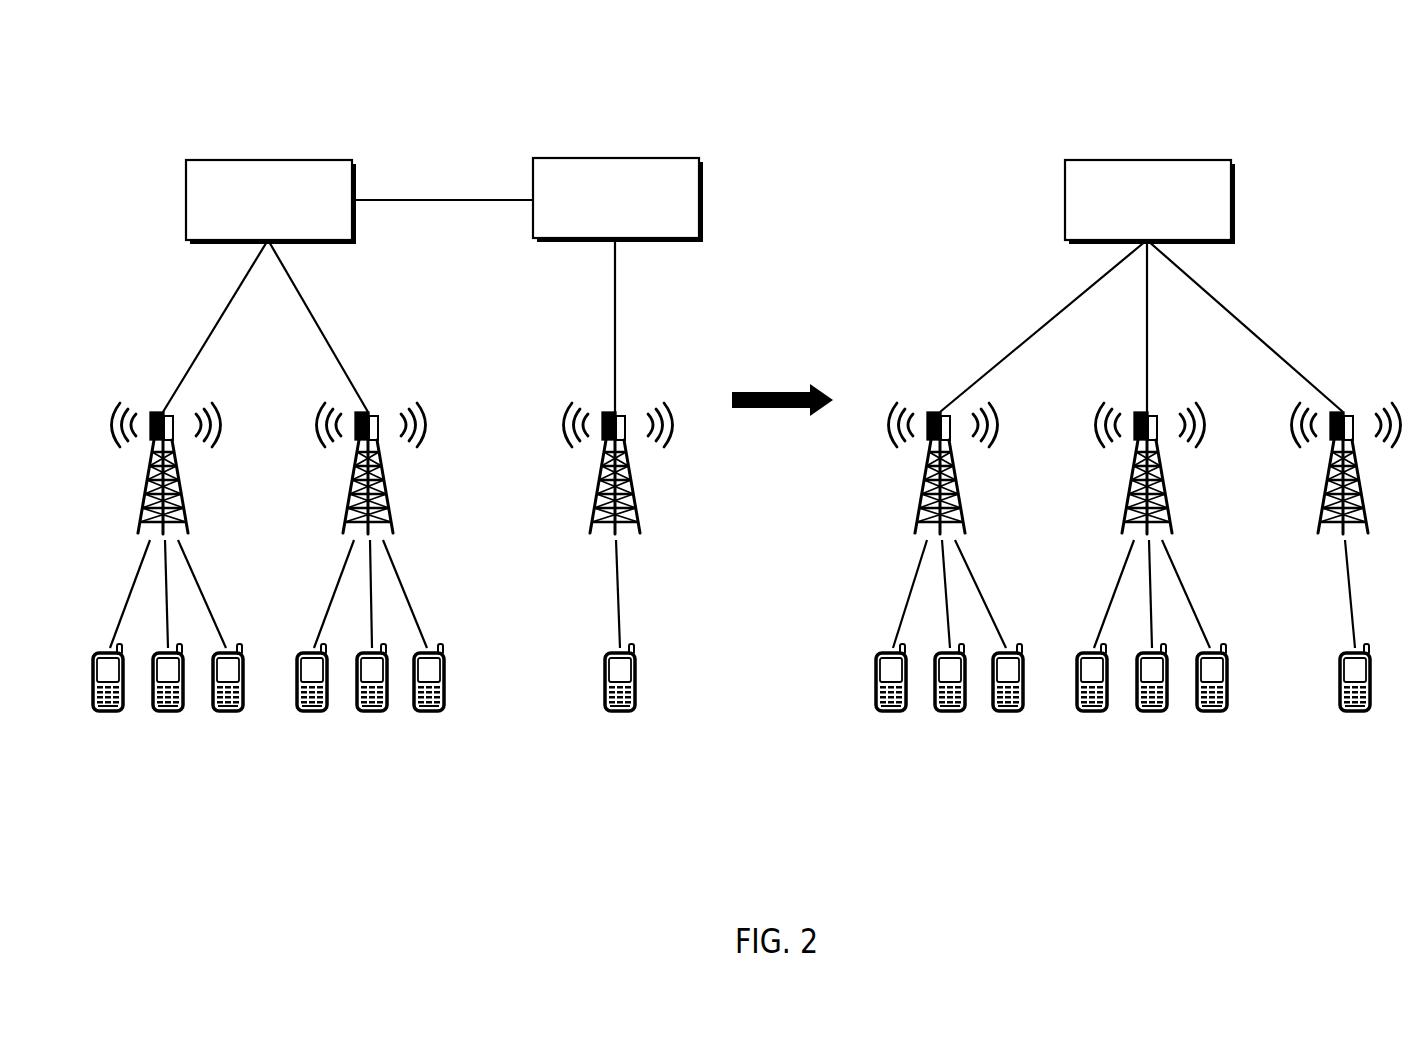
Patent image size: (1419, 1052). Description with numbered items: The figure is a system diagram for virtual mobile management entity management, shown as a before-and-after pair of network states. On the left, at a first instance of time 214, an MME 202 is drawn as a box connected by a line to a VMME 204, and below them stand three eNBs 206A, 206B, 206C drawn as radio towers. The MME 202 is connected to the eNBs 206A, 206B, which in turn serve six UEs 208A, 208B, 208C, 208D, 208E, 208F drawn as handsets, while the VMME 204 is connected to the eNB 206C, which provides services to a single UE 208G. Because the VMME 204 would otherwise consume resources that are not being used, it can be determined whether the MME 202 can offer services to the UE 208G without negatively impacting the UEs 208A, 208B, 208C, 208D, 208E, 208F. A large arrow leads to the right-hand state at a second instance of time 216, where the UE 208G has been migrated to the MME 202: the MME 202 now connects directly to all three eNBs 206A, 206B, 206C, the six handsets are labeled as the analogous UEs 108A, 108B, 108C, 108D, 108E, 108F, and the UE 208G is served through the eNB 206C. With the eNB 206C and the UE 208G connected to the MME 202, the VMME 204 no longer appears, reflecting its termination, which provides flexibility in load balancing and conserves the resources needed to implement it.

The first instance of time 214 is at (261, 72).
The second instance of time 216 is at (998, 72).
The MME 202 is at (232, 160).
The VMME 204 is at (570, 159).
The eNB 206A is at (158, 410).
The eNB 206B is at (370, 410).
The eNB 206C is at (611, 410).
The UE 208A is at (108, 712).
The UE 208B is at (168, 712).
The UE 208C is at (228, 712).
The UE 208D is at (312, 712).
The UE 208E is at (372, 712).
The UE 208F is at (429, 712).
The UE 208G is at (620, 712).
The UE 108A is at (891, 712).
The UE 108B is at (950, 712).
The UE 108C is at (1008, 712).
The UE 108D is at (1092, 712).
The UE 108E is at (1152, 712).
The UE 108F is at (1212, 712).